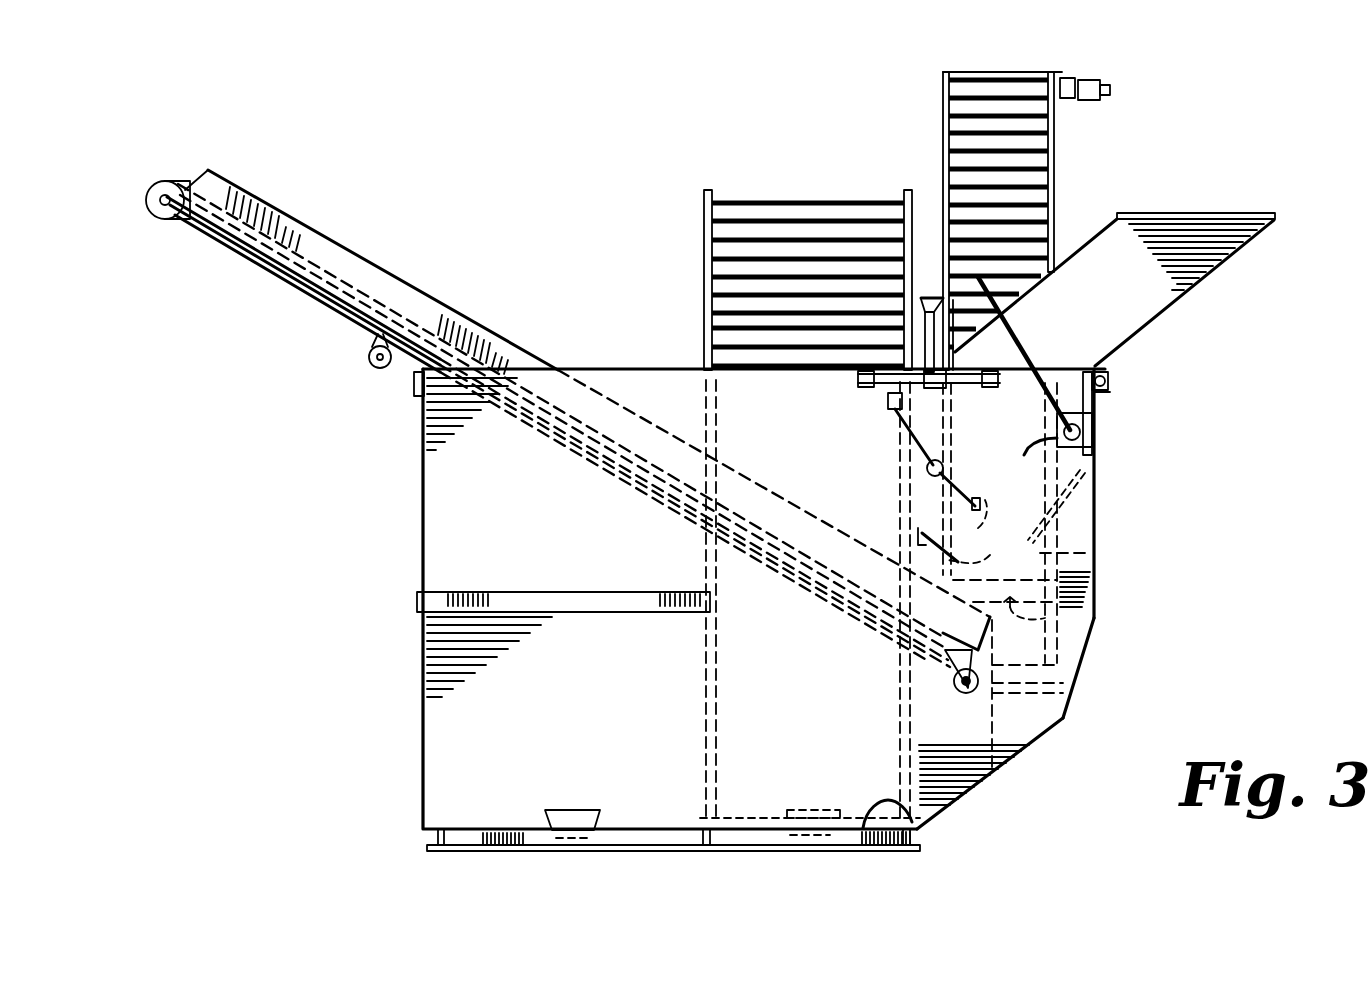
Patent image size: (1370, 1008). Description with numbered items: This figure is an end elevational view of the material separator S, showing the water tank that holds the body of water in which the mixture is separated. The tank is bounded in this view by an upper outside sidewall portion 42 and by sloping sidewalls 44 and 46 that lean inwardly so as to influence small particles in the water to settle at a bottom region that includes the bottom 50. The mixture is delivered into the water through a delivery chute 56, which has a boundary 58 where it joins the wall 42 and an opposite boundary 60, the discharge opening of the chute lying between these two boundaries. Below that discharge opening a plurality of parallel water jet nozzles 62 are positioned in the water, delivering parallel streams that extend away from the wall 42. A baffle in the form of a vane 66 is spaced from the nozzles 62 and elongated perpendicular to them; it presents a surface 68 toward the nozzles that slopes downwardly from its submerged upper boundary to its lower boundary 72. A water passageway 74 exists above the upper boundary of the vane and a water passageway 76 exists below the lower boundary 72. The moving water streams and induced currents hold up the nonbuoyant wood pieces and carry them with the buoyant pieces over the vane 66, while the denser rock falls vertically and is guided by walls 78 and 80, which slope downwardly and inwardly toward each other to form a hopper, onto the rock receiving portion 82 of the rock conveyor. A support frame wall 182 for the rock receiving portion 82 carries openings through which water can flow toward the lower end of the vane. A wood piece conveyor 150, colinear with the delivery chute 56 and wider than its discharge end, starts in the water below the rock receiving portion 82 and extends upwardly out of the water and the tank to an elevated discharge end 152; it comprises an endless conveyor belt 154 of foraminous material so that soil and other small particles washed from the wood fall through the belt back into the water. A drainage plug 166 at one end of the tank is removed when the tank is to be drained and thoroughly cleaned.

The upper outside sidewall portion 42 is at (1097, 522).
The sidewall 44 is at (1086, 633).
The sidewall 46 is at (1005, 757).
The bottom 50 is at (922, 822).
The delivery chute 56 is at (1200, 265).
The boundary 58 is at (1108, 370).
The opposite boundary 60 is at (950, 375).
The water jet nozzles 62 is at (1097, 447).
The vane 66 is at (905, 455).
The surface 68 is at (965, 470).
The lower boundary 72 is at (976, 437).
The water passageway 74 is at (840, 390).
The water passageway 76 is at (1085, 553).
The wall 78 is at (895, 548).
The wall 80 is at (1078, 487).
The rock receiving portion 82 is at (1063, 172).
The wood piece conveyor 150 is at (576, 480).
The elevated discharge end 152 is at (170, 185).
The endless conveyor belt 154 is at (275, 292).
The drainage plug 166 is at (807, 805).
The support frame wall 182 is at (573, 805).
The separator S is at (618, 305).